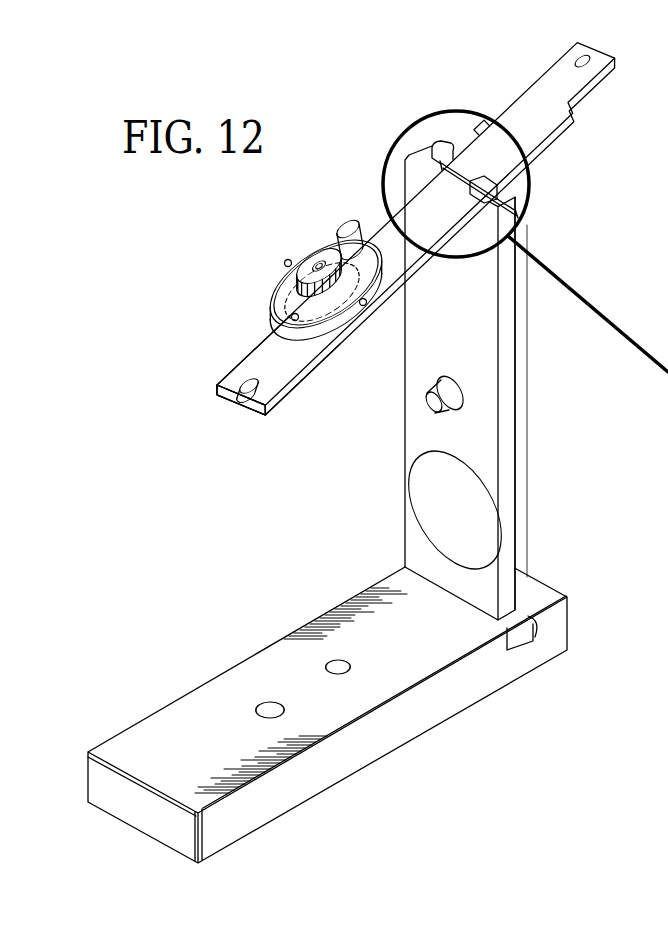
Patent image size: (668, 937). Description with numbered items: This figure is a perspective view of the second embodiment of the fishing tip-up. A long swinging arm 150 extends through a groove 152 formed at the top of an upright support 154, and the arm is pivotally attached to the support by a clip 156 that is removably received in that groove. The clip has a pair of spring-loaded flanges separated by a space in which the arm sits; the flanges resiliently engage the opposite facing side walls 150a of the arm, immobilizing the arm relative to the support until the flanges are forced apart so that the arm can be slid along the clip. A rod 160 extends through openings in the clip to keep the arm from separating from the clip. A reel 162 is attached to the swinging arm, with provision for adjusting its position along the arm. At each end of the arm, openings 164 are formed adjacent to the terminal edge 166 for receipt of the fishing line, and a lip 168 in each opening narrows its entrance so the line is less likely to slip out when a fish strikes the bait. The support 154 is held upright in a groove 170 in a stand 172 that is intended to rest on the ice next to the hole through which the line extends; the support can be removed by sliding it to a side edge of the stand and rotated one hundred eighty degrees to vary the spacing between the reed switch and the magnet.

The swinging arm 150 is at (540, 115).
The side walls 150a is at (250, 345).
The groove 152 is at (460, 249).
The support 154 is at (525, 423).
The clip 156 is at (447, 140).
The rod 160 is at (446, 168).
The reel 162 is at (310, 243).
The openings 164 is at (228, 370).
The terminal edge 166 is at (257, 408).
The lip 168 is at (233, 395).
The groove 170 is at (521, 640).
The stand 172 is at (425, 713).